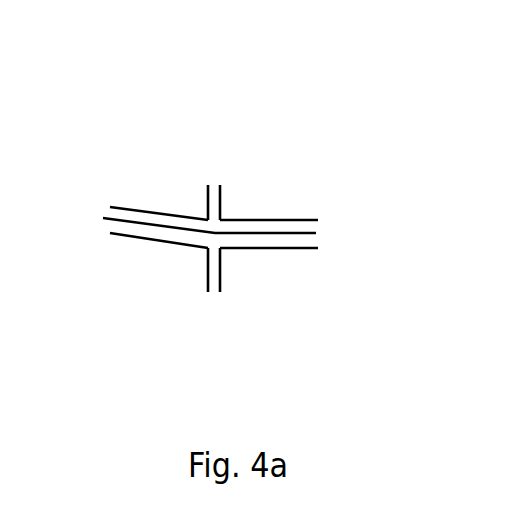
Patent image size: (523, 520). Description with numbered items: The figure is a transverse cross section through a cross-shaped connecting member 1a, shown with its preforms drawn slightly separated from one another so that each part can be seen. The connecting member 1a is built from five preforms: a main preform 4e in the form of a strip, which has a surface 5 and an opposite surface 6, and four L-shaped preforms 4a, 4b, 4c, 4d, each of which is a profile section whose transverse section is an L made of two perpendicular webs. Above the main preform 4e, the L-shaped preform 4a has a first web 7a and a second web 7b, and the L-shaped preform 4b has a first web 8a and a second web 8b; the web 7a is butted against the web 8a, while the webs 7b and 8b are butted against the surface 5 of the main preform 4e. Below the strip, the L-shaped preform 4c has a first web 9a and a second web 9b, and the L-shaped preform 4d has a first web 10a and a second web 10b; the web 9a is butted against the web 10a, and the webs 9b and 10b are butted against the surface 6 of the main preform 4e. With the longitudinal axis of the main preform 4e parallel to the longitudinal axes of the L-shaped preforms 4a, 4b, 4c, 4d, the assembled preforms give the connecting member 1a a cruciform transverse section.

The cross-shaped connecting member 1a is at (166, 108).
The L-shaped preform 4a is at (155, 213).
The L-shaped preform 4b is at (277, 219).
The L-shaped preform 4c is at (135, 237).
The L-shaped preform 4d is at (268, 249).
The main preform 4e is at (316, 233).
The surface 5 is at (100, 201).
The surface 6 is at (100, 233).
The first web 7a is at (203, 196).
The second web 7b is at (113, 196).
The first web 8a is at (227, 197).
The second web 8b is at (300, 209).
The first web 9a is at (200, 284).
The second web 9b is at (171, 254).
The first web 10a is at (229, 286).
The second web 10b is at (311, 264).